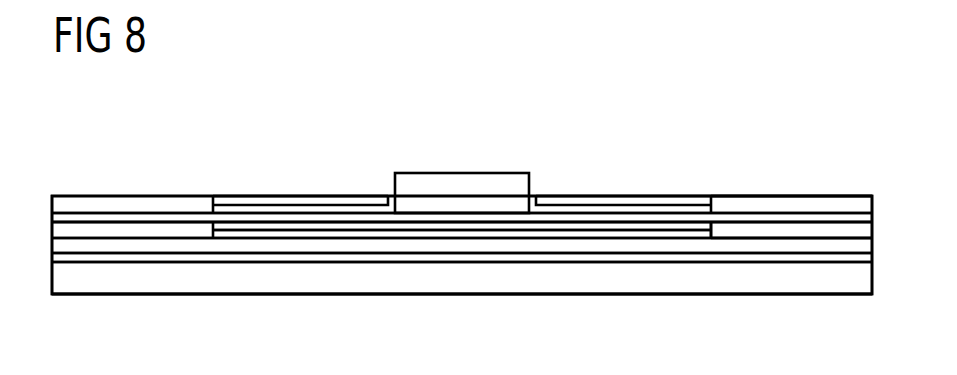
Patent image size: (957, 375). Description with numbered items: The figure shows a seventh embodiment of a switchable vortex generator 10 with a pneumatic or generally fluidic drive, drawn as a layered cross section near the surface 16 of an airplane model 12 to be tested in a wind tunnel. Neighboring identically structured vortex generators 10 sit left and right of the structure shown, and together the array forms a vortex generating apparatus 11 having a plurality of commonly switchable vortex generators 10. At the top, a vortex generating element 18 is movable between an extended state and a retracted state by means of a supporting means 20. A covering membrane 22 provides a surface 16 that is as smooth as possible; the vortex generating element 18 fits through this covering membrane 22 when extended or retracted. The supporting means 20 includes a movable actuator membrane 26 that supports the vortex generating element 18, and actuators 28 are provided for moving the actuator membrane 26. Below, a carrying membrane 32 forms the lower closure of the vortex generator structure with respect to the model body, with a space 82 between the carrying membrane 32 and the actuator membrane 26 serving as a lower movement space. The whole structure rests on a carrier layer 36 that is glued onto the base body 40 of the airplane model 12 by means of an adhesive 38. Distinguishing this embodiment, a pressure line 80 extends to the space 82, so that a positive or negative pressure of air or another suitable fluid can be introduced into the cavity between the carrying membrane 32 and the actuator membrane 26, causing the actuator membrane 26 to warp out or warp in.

The switchable vortex generator 10 is at (65, 158).
The vortex generating apparatus 11 is at (654, 80).
The airplane model 12 is at (680, 283).
The surface 16 is at (727, 196).
The vortex generating element 18 is at (462, 187).
The supporting means 20 is at (550, 233).
The covering membrane 22 is at (640, 202).
The actuator membrane 26 is at (380, 217).
The actuators 28 is at (674, 251).
The carrying membrane 32 is at (445, 233).
The carrier layer 36 is at (403, 242).
The adhesive 38 is at (595, 257).
The base body 40 is at (760, 277).
The pressure line 80 is at (830, 233).
The space 82 is at (487, 223).